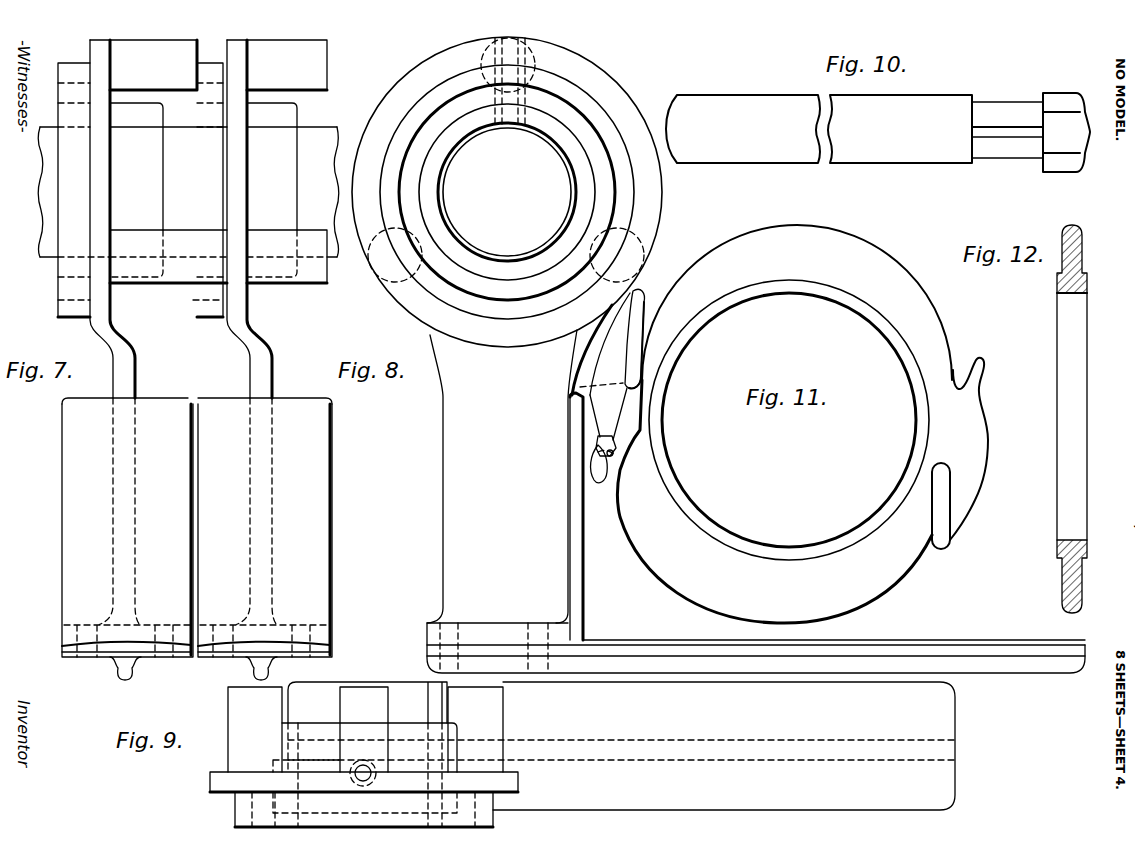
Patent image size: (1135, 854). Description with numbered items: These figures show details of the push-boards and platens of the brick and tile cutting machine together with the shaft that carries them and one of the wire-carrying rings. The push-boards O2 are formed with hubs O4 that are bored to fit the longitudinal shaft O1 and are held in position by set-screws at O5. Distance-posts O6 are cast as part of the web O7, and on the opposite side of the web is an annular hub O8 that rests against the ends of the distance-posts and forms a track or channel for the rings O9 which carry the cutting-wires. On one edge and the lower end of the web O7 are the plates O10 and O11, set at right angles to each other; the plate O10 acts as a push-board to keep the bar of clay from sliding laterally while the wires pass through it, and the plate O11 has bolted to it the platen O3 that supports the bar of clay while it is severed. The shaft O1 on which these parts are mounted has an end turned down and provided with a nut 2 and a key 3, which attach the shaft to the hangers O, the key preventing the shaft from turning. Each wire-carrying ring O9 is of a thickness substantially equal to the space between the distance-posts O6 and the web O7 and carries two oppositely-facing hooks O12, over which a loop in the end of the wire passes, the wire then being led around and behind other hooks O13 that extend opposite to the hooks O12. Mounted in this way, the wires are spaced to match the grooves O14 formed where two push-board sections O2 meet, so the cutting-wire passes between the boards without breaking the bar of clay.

In FIG. 7, the longitudinal shaft O1 is at (307, 210).
In FIG. 10, the longitudinal shaft O1 is at (919, 122).
In FIG. 7, the push-board O2 is at (161, 563).
In FIG. 8, the platen O3 is at (901, 637).
In FIG. 9, the platen O3 is at (717, 718).
In FIG. 7, the hub O4 is at (267, 173).
In FIG. 9, the hub O4 is at (411, 714).
In FIG. 8, the set-screw O5 is at (523, 35).
In FIG. 9, the set-screw O5 is at (353, 776).
In FIG. 7, the distance-post O6 is at (287, 69).
In FIG. 9, the distance-post O6 is at (357, 721).
In FIG. 7, the web O7 is at (260, 336).
In FIG. 9, the web O7 is at (529, 787).
In FIG. 7, the annular hub O8 is at (193, 291).
In FIG. 9, the annular hub O8 is at (253, 800).
In FIG. 8, the wire-carrying ring O9 is at (507, 192).
In FIG. 11, the wire-carrying ring O9 is at (805, 265).
In FIG. 8, the plate O10 is at (571, 489).
In FIG. 11, the plate O10 is at (600, 466).
In FIG. 8, the plate O11 is at (437, 621).
In FIG. 11, the hook O12 is at (608, 484).
In FIG. 11, the hook O13 is at (643, 295).
In FIG. 7, the groove O14 is at (203, 390).
In FIG. 12, the hanger O is at (1080, 217).
In FIG. 10, the nut 2 is at (1061, 98).
In FIG. 10, the key 3 is at (993, 133).